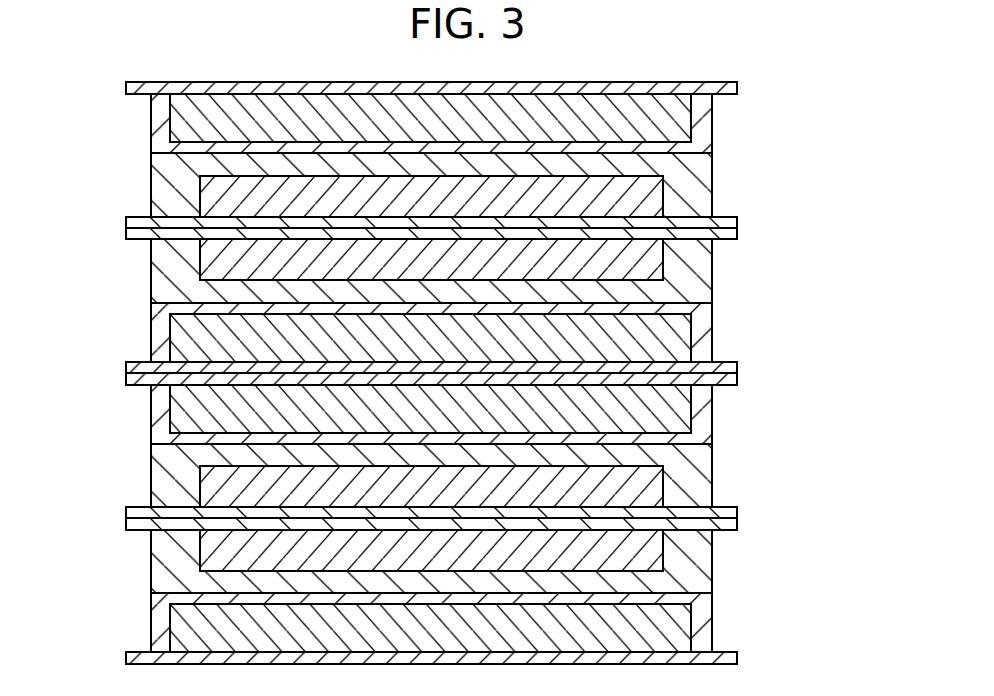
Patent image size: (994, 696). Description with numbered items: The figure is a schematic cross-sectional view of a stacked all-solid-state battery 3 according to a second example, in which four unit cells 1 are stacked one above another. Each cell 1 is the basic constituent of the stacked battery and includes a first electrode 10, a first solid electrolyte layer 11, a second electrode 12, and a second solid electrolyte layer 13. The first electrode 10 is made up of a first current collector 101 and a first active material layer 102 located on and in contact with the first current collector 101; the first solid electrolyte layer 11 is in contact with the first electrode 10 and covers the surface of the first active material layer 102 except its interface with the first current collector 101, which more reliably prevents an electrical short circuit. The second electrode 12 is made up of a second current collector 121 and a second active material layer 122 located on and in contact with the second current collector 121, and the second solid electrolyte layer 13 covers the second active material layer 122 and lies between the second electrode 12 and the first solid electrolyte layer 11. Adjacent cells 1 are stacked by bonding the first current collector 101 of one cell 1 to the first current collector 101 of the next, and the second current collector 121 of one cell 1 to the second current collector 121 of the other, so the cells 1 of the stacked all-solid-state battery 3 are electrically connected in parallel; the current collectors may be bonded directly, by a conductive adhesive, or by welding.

The stacked all-solid-state battery 3 is at (70, 82).
The cell 1 is at (106, 373).
The first electrode 10 is at (868, 72).
The first current collector 101 is at (735, 89).
The first active material layer 102 is at (668, 113).
The first solid electrolyte layer 11 is at (697, 137).
The second solid electrolyte layer 13 is at (685, 170).
The second electrode 12 is at (868, 144).
The second current collector 121 is at (733, 222).
The second active material layer 122 is at (647, 204).